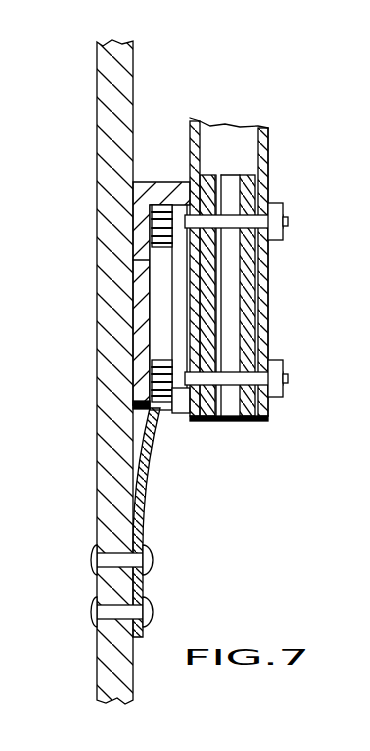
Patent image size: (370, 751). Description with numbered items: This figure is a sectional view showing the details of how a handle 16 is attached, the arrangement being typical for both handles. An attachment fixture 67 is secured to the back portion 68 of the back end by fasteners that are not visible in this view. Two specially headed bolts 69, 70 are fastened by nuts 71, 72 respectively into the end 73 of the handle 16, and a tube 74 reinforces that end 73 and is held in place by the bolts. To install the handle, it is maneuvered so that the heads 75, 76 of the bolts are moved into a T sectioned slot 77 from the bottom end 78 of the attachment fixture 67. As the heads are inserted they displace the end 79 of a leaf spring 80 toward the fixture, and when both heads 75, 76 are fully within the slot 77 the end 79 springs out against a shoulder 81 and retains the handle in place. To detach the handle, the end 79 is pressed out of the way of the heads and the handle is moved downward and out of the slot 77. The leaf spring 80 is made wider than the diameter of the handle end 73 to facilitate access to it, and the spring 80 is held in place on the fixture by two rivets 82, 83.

The handle 16 is at (258, 126).
The attachment fixture 67 is at (157, 182).
The back portion 68 is at (135, 88).
The specially headed bolt 69 is at (262, 172).
The specially headed bolt 70 is at (259, 332).
The nut 71 is at (279, 210).
The nut 72 is at (283, 368).
The handle end 73 is at (270, 418).
The tube 74 is at (246, 293).
The bolt head 75 is at (152, 250).
The bolt head 76 is at (143, 352).
The T sectioned slot 77 is at (163, 313).
The bottom end 78 is at (135, 402).
The leaf spring end 79 is at (150, 410).
The leaf spring 80 is at (160, 425).
The shoulder 81 is at (183, 415).
The rivet 82 is at (154, 561).
The rivet 83 is at (154, 612).